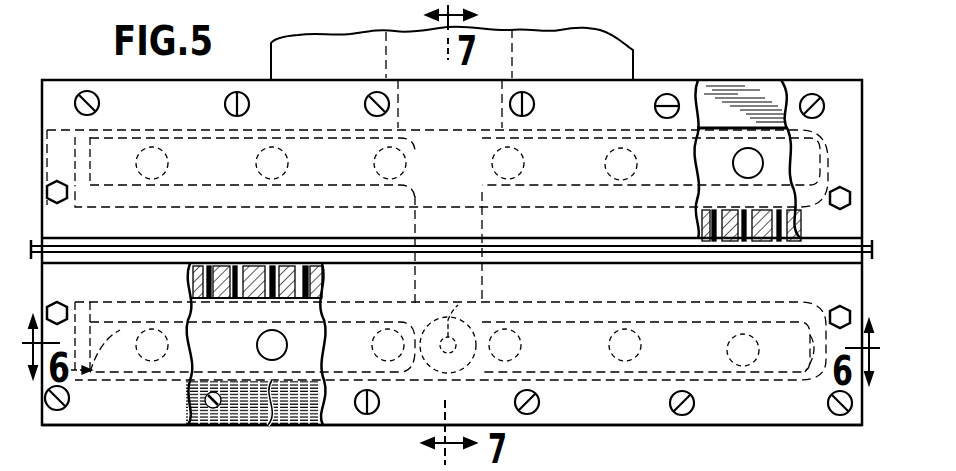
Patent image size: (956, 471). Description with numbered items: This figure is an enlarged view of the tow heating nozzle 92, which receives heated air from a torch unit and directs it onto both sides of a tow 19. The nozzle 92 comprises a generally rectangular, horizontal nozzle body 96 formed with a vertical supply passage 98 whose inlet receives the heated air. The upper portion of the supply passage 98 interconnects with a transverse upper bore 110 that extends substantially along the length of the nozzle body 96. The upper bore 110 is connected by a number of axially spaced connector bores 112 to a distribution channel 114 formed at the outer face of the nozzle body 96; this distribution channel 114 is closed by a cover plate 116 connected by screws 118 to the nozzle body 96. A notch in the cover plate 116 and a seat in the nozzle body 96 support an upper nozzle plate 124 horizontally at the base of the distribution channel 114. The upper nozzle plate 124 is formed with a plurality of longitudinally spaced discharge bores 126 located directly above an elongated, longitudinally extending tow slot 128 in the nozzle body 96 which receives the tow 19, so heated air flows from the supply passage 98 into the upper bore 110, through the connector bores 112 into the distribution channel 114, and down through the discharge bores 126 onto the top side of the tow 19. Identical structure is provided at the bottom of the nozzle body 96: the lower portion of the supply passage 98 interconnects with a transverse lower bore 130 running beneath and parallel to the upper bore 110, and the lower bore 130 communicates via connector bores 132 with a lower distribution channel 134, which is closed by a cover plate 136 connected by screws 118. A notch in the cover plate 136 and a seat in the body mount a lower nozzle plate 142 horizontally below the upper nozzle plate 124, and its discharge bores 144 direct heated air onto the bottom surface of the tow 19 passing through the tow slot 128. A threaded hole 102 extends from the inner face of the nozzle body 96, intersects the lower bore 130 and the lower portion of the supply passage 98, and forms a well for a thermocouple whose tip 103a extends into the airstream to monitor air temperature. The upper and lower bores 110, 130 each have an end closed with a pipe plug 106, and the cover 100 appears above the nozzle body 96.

The tow 19 is at (548, 252).
The nozzle 92 is at (678, 64).
The nozzle body 96 is at (604, 430).
The supply passage 98 is at (413, 233).
The cover 100 is at (515, 57).
The threaded hole 102 is at (440, 367).
The pivot hole 103a is at (466, 310).
The pipe plug 106 is at (99, 128).
The upper bore 110 is at (591, 184).
The connector bores 112 is at (255, 160).
The distribution channel 114 is at (738, 128).
The cover plate 116 is at (601, 120).
The screws 118 is at (508, 104).
The upper nozzle plate 124 is at (744, 245).
The discharge bores 126 is at (698, 229).
The tow slot 128 is at (567, 266).
The lower bore 130 is at (190, 372).
The connector bores 132 is at (290, 345).
The lower distribution channel 134 is at (272, 426).
The cover plate 136 is at (618, 416).
The lower nozzle plate 142 is at (286, 290).
The discharge bores 144 is at (190, 290).